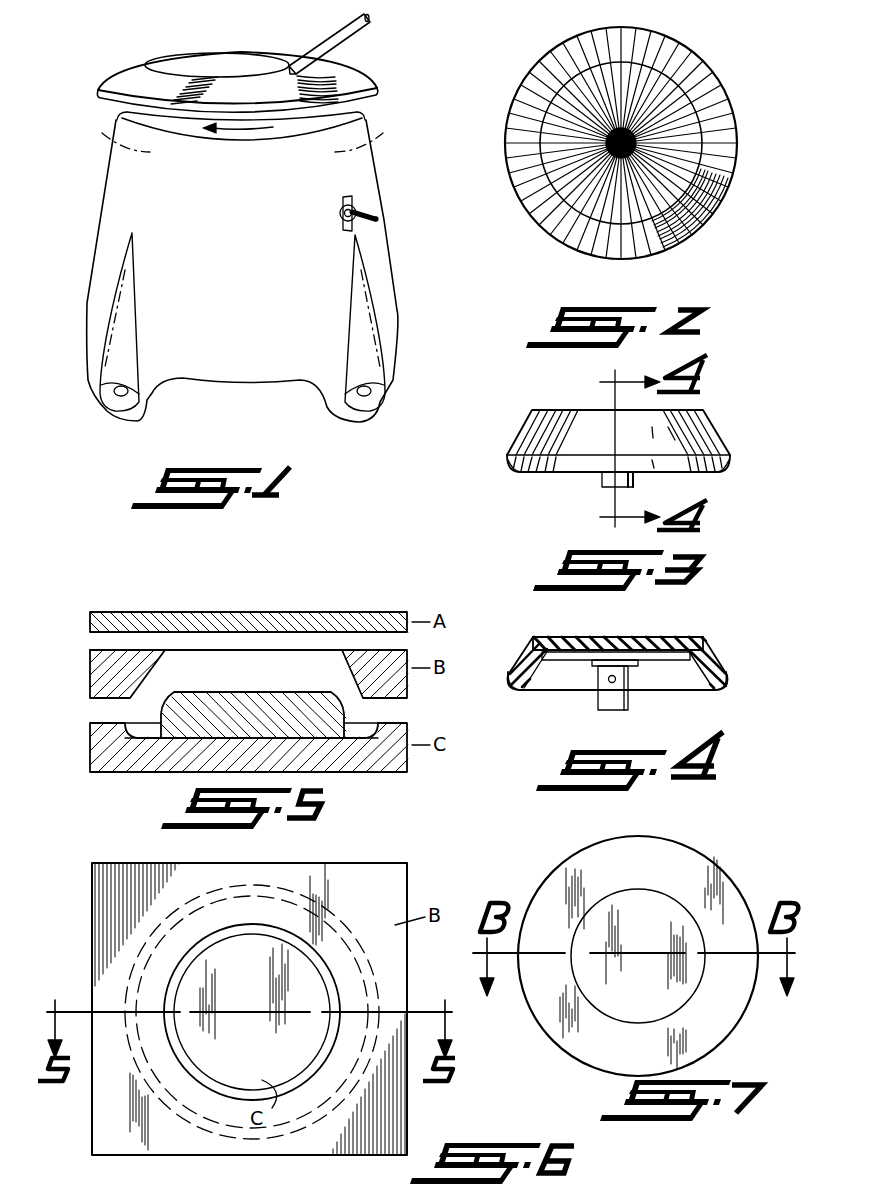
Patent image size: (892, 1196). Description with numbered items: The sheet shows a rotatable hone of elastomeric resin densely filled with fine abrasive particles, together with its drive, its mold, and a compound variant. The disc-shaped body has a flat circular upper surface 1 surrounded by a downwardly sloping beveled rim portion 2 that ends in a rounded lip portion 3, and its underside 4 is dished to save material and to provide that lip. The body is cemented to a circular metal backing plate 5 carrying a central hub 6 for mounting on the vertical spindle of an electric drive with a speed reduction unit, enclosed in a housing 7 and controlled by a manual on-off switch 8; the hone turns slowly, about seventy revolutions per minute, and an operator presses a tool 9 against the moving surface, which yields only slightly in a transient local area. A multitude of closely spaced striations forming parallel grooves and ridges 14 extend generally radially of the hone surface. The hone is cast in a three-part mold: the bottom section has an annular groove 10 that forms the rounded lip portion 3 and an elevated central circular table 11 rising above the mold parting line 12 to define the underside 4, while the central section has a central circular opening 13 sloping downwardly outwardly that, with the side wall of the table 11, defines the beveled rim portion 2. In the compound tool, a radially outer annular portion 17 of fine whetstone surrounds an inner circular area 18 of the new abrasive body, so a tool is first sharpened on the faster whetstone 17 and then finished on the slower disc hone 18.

In FIG. 1, the flat circular upper surface 1 is at (180, 62).
In FIG. 2, the flat circular upper surface 1 is at (580, 78).
In FIG. 3, the flat circular upper surface 1 is at (560, 420).
In FIG. 4, the flat circular upper surface 1 is at (645, 640).
In FIG. 1, the beveled rim portion 2 is at (358, 84).
In FIG. 2, the beveled rim portion 2 is at (712, 96).
In FIG. 3, the beveled rim portion 2 is at (715, 428).
In FIG. 4, the beveled rim portion 2 is at (712, 656).
In FIG. 2, the rounded lip portion 3 is at (512, 100).
In FIG. 3, the rounded lip portion 3 is at (728, 462).
In FIG. 4, the rounded lip portion 3 is at (726, 688).
In FIG. 4, the underside 4 is at (538, 672).
In FIG. 4, the circular metal backing plate 5 is at (572, 664).
In FIG. 3, the central hub 6 is at (600, 483).
In FIG. 4, the central hub 6 is at (632, 682).
In FIG. 1, the housing 7 is at (123, 178).
In FIG. 1, the manual on-off switch 8 is at (375, 178).
In FIG. 1, the tool 9 is at (340, 20).
In FIG. 5, the annular groove 10 is at (138, 735).
In FIG. 6, the annular groove 10 is at (375, 990).
In FIG. 5, the central circular table 11 is at (290, 692).
In FIG. 6, the central circular table 11 is at (258, 945).
In FIG. 5, the mold parting line 12 is at (100, 718).
In FIG. 5, the central circular opening 13 is at (140, 692).
In FIG. 2, the parallel grooves and ridges 14 is at (687, 158).
In FIG. 7, the radially outer annular portion 17 is at (708, 868).
In FIG. 7, the inner circular area 18 is at (608, 900).